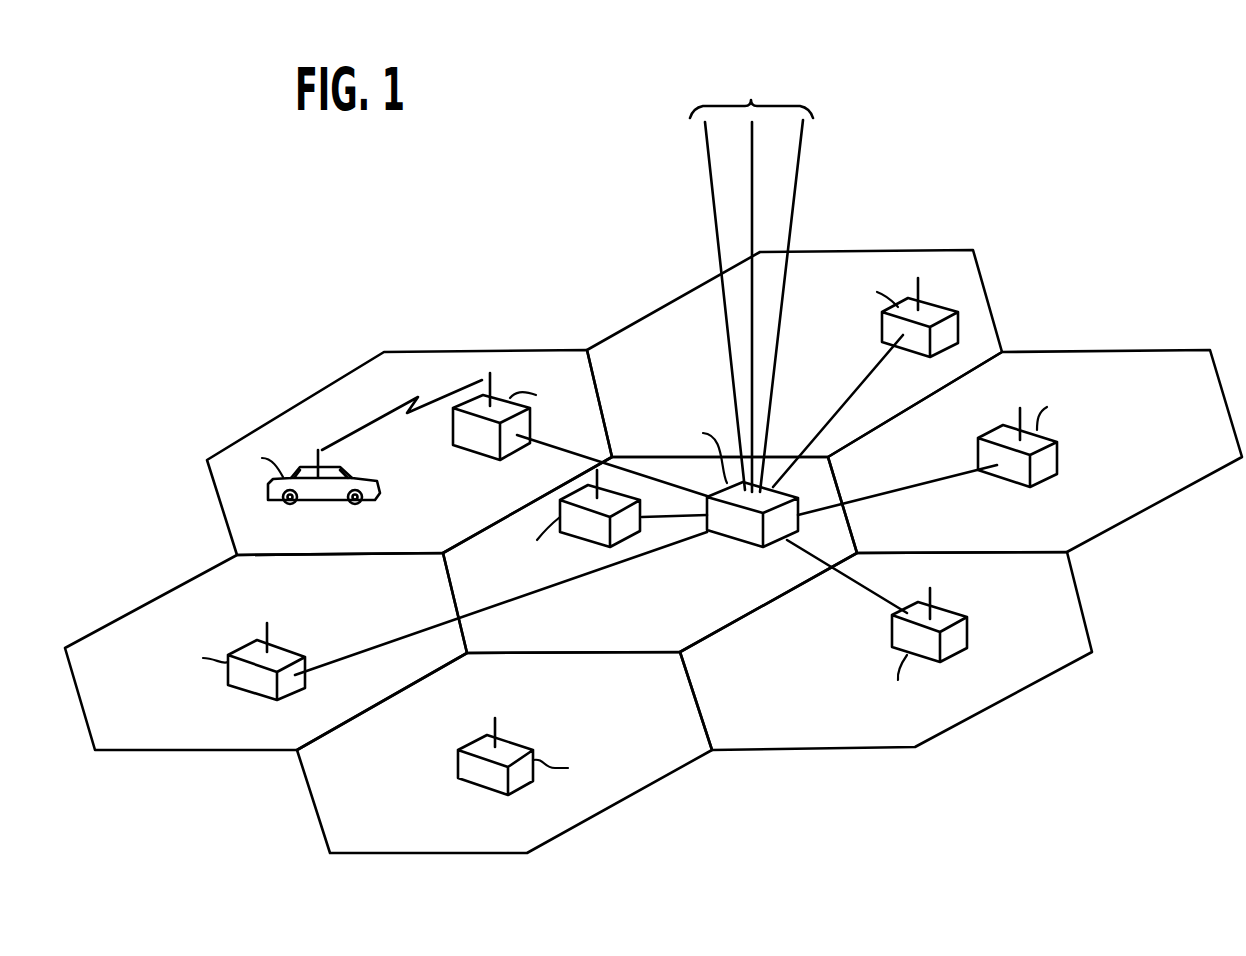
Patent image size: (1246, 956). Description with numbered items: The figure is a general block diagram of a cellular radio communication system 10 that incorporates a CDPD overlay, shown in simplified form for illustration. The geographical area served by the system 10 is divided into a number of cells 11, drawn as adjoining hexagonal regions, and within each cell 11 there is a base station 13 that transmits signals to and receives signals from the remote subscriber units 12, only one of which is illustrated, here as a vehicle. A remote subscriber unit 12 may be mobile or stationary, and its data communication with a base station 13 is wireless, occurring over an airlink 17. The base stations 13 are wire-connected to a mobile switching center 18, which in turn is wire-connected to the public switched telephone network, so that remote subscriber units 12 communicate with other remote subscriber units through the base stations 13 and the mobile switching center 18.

The cellular radio communication system 10 is at (1113, 128).
The cell 11 is at (407, 365).
The remote subscriber unit 12 is at (305, 464).
The base station 13 is at (505, 403).
The airlink 17 is at (360, 426).
The mobile switching center 18 is at (720, 530).